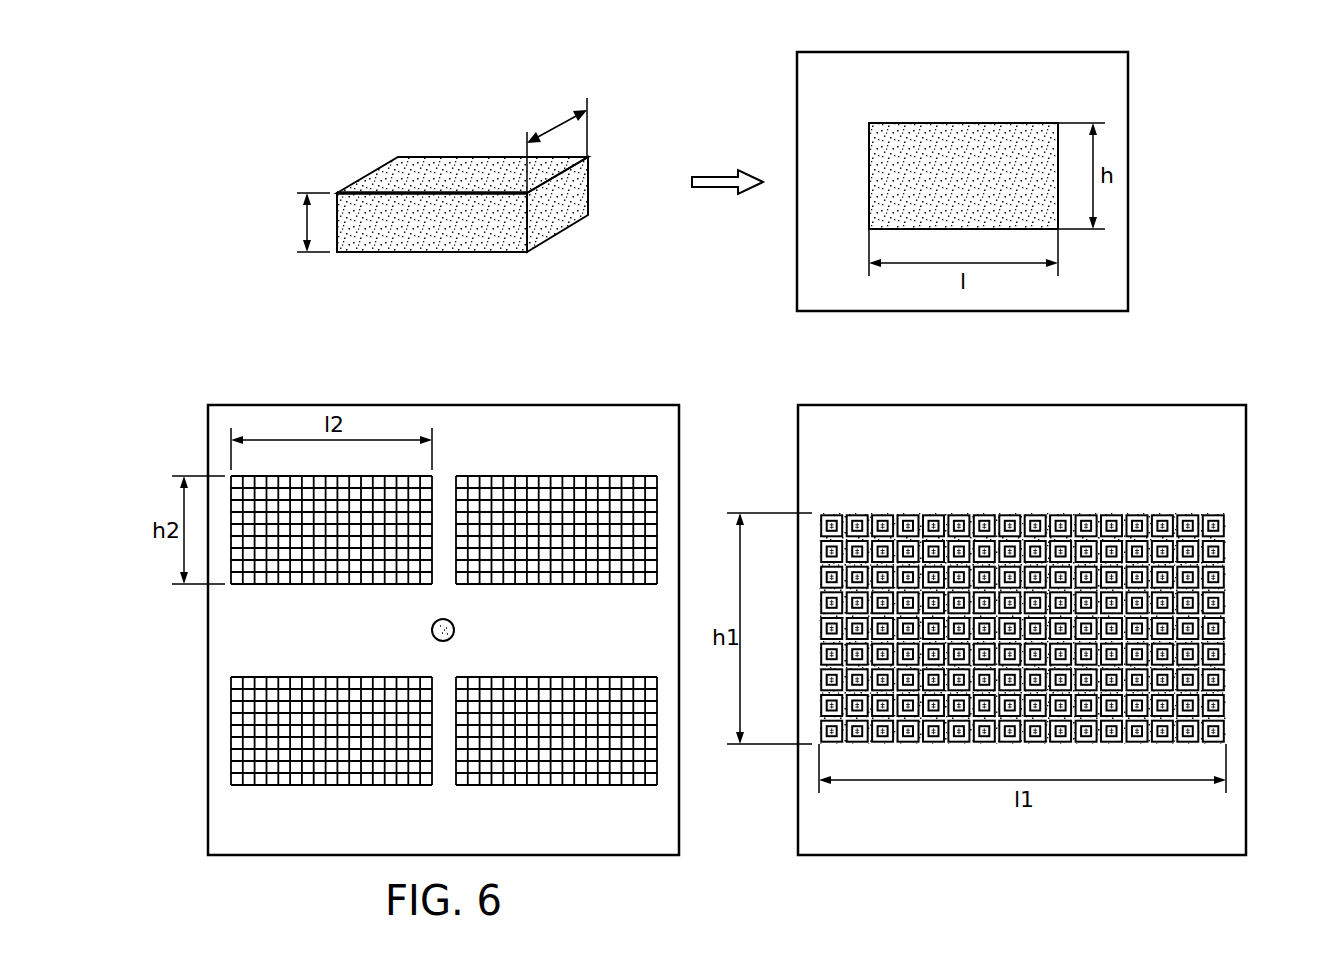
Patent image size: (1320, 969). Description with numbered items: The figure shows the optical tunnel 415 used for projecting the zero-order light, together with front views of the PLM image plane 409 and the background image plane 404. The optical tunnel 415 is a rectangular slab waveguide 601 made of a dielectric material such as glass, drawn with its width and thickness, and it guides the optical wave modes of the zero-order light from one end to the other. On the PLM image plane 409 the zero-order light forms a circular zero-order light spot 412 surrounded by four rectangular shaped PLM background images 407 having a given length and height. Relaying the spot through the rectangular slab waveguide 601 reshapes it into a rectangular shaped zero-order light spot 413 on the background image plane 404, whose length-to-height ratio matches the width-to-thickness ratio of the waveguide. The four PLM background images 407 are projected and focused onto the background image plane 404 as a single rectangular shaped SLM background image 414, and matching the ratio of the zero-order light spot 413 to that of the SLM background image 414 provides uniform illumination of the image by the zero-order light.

The optical tunnel 415 is at (270, 82).
The rectangular slab waveguide 601 is at (432, 170).
The background image plane 404 is at (1140, 107).
The zero-order light spot 413 is at (965, 128).
The PLM image plane 409 is at (400, 396).
The PLM background images 407 is at (556, 476).
The zero-order light spot 412 is at (432, 630).
The SLM background image 414 is at (1148, 513).